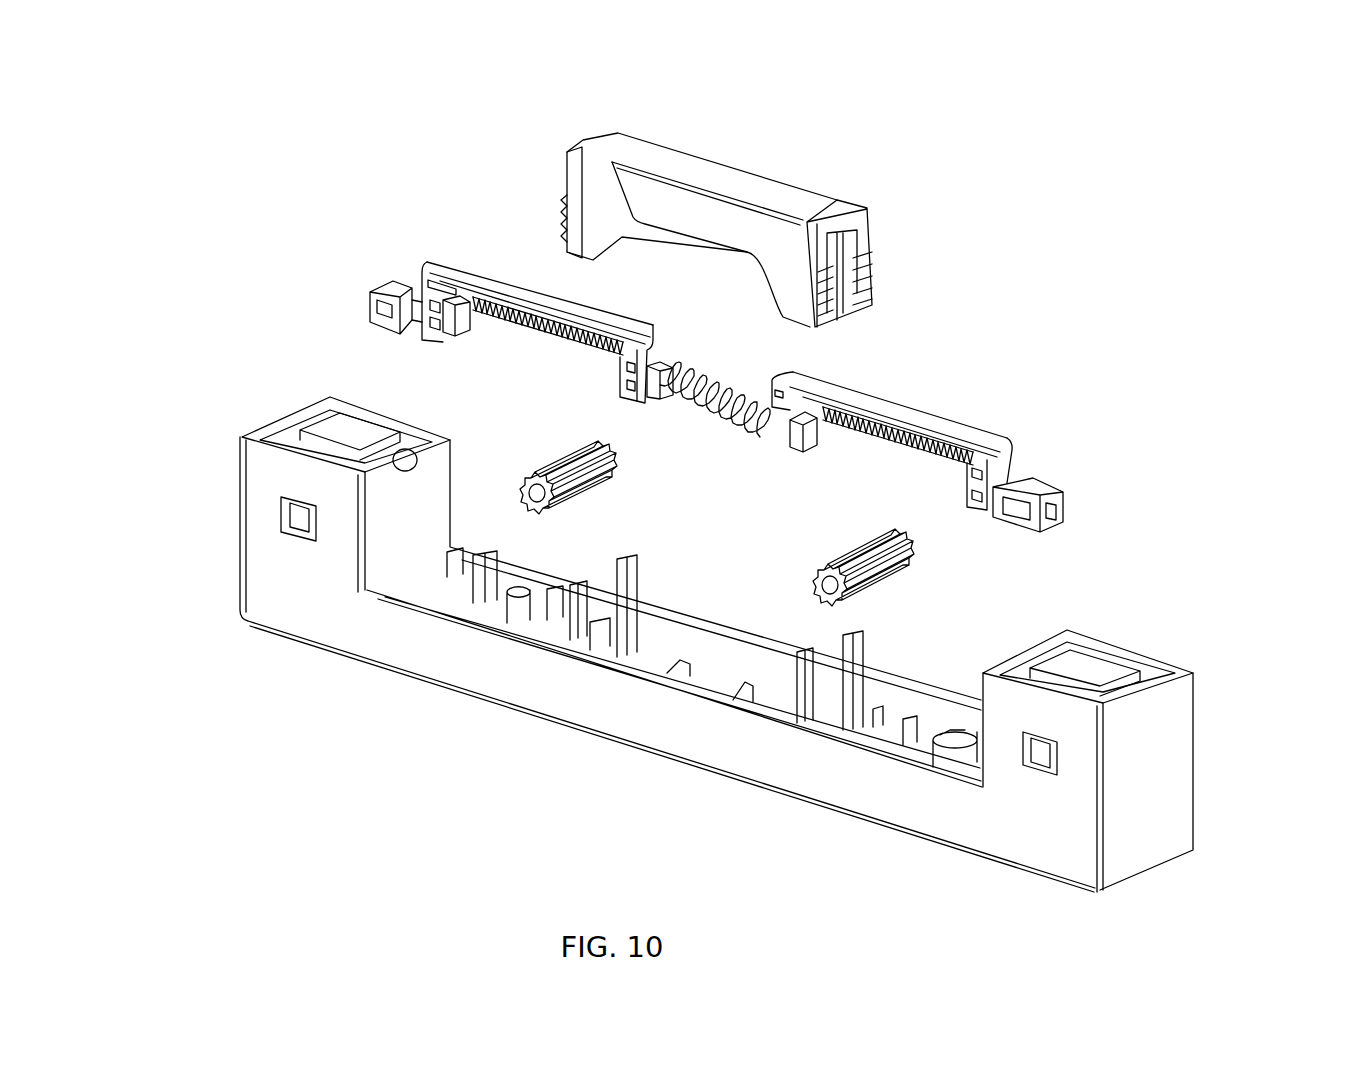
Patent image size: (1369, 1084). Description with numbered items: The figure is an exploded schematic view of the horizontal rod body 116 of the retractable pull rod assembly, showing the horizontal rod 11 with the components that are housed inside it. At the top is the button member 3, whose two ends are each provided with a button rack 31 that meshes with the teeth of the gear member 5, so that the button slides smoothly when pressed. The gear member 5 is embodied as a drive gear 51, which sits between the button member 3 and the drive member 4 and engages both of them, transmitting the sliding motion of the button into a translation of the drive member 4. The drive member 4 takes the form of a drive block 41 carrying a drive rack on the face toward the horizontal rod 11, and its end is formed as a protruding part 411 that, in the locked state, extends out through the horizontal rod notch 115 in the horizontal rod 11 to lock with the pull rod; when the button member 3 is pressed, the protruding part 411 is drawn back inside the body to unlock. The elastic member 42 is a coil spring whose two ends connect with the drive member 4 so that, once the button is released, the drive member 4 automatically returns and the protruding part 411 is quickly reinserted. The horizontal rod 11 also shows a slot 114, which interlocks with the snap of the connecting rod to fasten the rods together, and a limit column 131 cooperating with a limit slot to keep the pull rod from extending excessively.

The button member 3 is at (575, 152).
The button rack 31 is at (866, 262).
The drive member 4 is at (377, 283).
The drive block 41 is at (455, 262).
The protruding part 411 is at (1040, 481).
The elastic member 42 is at (742, 365).
The gear member 5 is at (553, 447).
The drive gear 51 is at (912, 558).
The horizontal rod 11 is at (422, 632).
The limit column 131 is at (276, 432).
The slot 114 is at (293, 520).
The horizontal rod notch 115 is at (413, 590).
The horizontal rod body 116 is at (1120, 664).